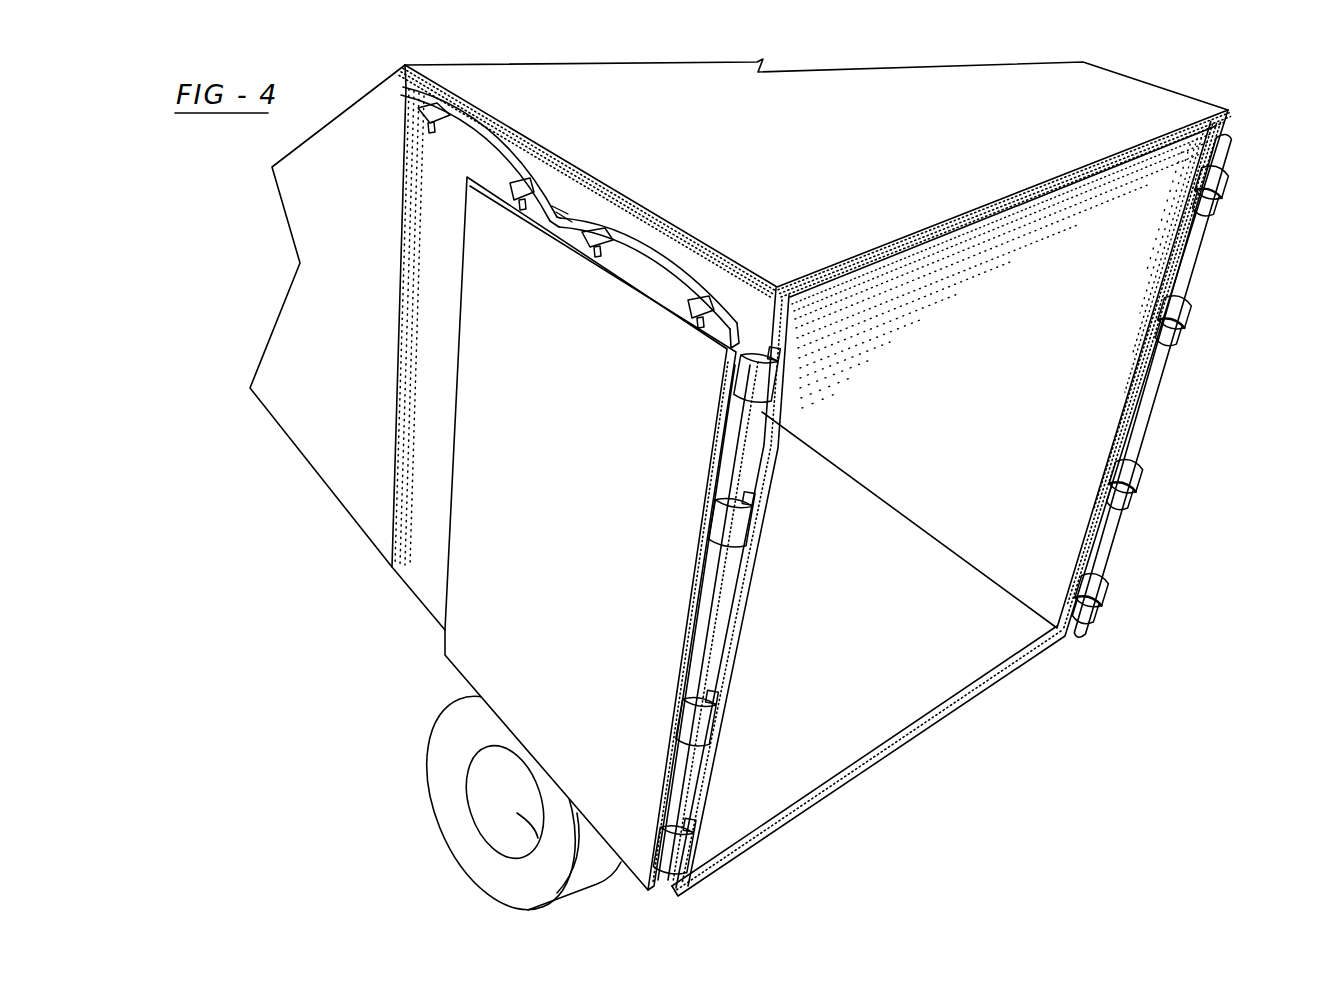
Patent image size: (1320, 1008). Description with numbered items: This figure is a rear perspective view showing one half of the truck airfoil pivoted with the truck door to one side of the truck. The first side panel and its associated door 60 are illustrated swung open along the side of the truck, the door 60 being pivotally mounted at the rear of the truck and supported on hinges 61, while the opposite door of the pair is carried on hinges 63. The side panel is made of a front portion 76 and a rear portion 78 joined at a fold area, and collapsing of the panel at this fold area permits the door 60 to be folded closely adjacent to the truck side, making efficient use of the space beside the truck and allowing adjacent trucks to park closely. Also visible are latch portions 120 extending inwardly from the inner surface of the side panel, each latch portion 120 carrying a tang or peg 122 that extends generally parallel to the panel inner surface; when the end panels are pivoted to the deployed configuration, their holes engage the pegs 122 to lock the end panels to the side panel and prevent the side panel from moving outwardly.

The door 60 is at (562, 745).
The hinge 61 is at (774, 392).
The hinge 63 is at (1220, 213).
The front portion of the first side panel 76 is at (415, 426).
The rear portion of the first side panel 78 is at (670, 252).
The latch portion 120 is at (450, 110).
The peg 122 is at (519, 205).